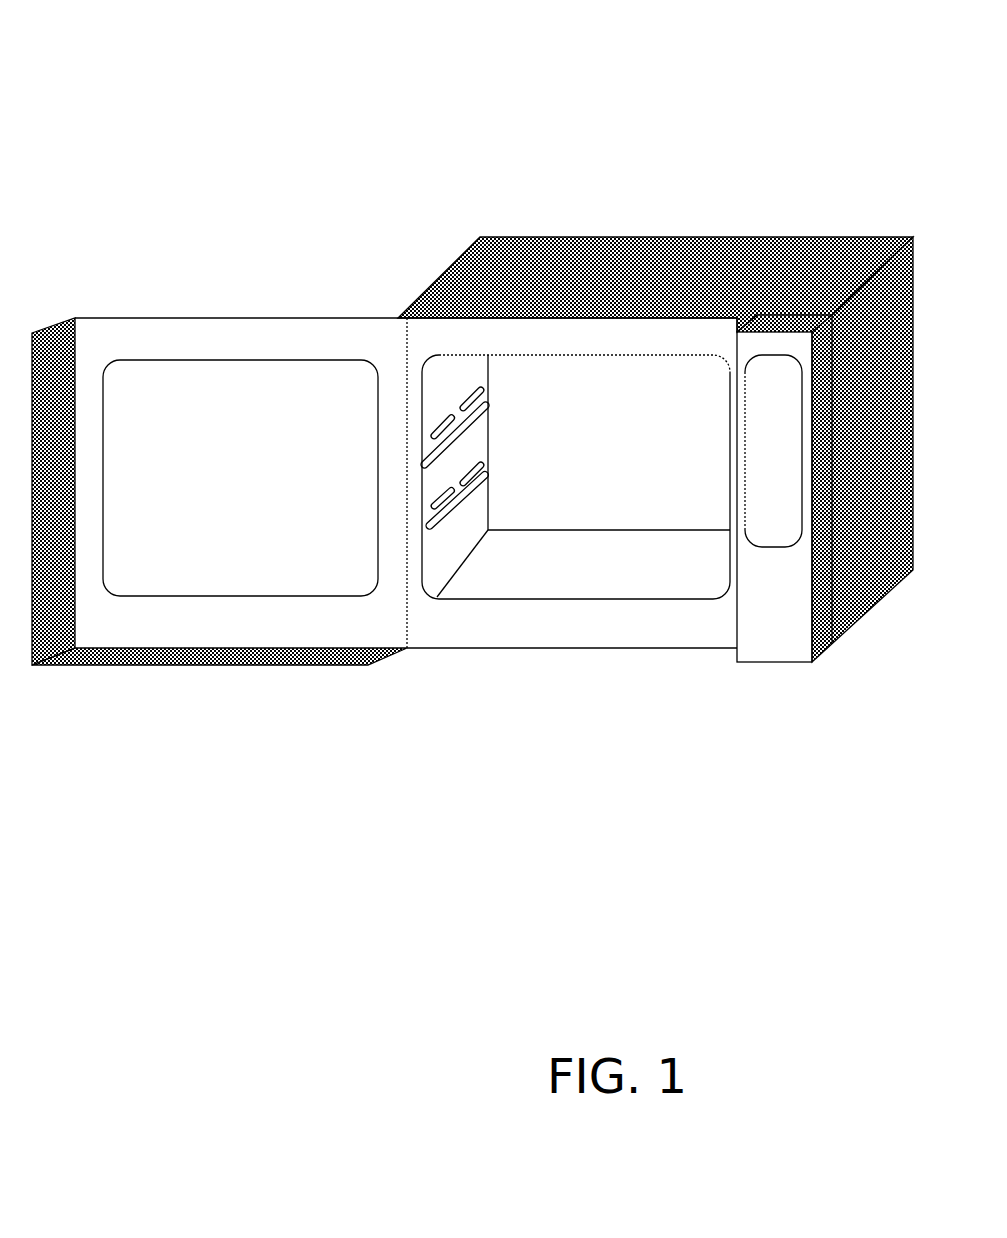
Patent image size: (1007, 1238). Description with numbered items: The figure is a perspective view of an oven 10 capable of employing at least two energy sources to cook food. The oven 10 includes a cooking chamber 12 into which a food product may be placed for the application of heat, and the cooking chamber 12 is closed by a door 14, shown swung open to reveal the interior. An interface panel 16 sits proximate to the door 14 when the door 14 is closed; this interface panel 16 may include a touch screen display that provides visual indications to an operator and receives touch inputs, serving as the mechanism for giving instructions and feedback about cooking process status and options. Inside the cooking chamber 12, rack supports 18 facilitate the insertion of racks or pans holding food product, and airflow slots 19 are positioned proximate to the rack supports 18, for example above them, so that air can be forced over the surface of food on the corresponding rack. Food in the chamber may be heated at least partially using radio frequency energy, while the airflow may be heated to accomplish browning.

The oven 10 is at (494, 336).
The cooking chamber 12 is at (576, 543).
The door 14 is at (219, 551).
The interface panel 16 is at (825, 497).
The rack supports 18 is at (507, 465).
The airflow slots 19 is at (392, 444).